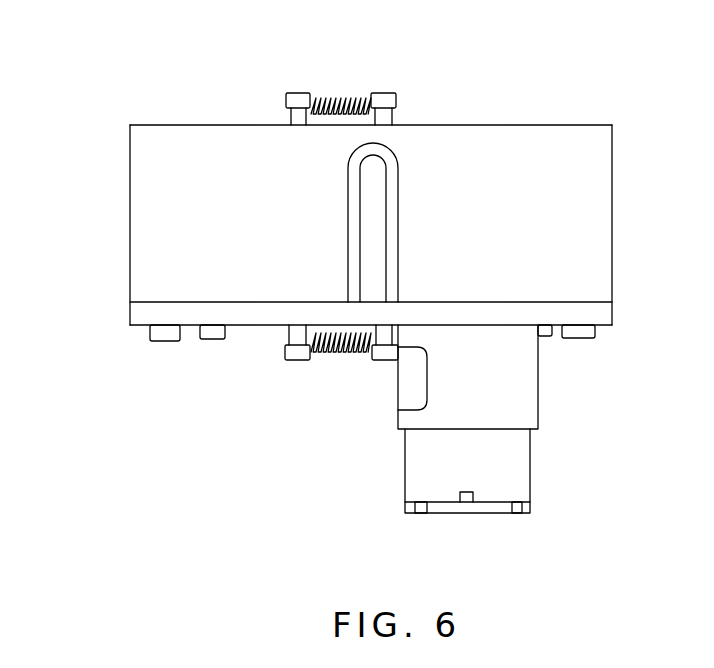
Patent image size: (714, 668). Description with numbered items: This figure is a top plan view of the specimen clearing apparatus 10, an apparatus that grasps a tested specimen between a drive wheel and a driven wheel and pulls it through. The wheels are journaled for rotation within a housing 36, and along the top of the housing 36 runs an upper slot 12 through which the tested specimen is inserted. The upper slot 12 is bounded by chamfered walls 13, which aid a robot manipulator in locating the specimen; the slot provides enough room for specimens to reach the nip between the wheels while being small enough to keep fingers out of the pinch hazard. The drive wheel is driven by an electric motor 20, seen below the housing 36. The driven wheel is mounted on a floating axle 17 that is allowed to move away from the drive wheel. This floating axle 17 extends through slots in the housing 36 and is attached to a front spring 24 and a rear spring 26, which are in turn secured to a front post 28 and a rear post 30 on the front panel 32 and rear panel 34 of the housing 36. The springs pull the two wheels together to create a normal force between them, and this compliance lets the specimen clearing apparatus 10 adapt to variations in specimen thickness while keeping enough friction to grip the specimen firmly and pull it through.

The specimen clearing apparatus 10 is at (100, 167).
The upper slot 12 is at (377, 229).
The chamfered walls 13 is at (348, 223).
The floating axle 17 is at (297, 92).
The electric motor 20 is at (518, 465).
The front spring 24 is at (343, 100).
The rear spring 26 is at (342, 357).
The front post 28 is at (383, 92).
The rear post 30 is at (380, 362).
The front panel 32 is at (202, 127).
The rear panel 34 is at (136, 330).
The housing 36 is at (128, 263).